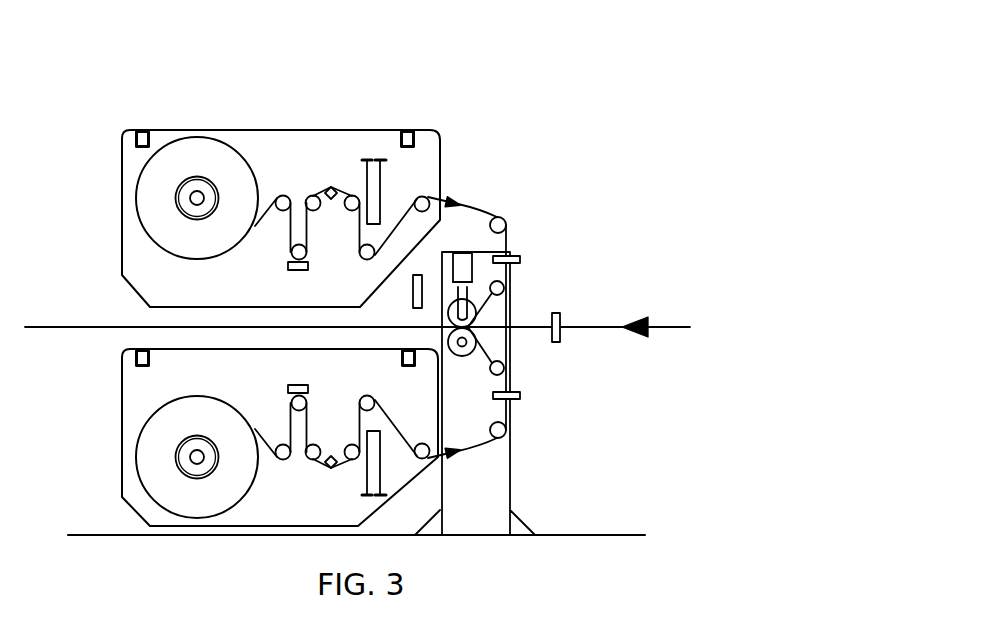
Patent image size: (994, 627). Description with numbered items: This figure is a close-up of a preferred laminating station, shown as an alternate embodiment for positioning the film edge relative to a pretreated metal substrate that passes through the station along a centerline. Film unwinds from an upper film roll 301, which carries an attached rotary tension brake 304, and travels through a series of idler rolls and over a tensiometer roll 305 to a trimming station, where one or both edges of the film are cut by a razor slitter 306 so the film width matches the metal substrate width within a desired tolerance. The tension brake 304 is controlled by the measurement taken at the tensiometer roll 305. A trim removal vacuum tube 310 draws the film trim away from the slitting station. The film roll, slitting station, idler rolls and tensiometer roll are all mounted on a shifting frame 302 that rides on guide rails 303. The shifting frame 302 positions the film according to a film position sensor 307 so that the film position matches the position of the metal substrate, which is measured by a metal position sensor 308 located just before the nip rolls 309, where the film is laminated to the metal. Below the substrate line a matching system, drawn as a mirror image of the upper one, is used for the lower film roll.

The upper film roll 301 is at (185, 137).
The shifting frame 302 is at (122, 220).
The guide rails 303 is at (138, 130).
The rotary tension brake 304 is at (168, 198).
The tensiometer roll 305 is at (288, 268).
The razor slitter 306 is at (332, 186).
The film position sensor 307 is at (520, 256).
The metal position sensor 308 is at (555, 346).
The nip rolls 309 is at (480, 310).
The trim removal vacuum tube 310 is at (383, 182).